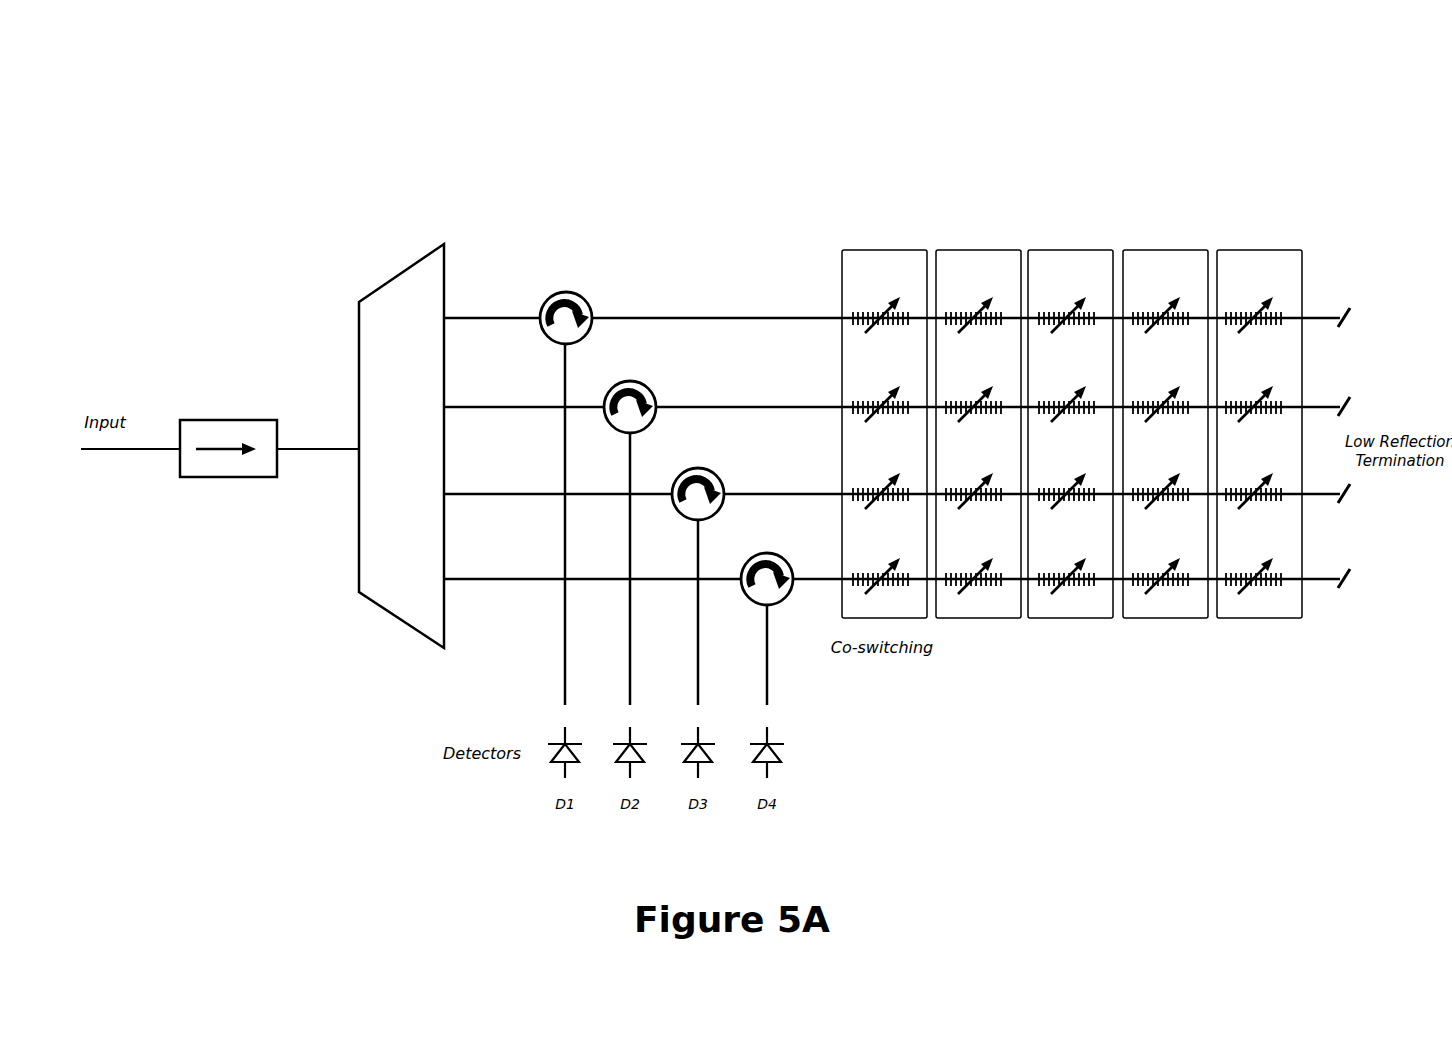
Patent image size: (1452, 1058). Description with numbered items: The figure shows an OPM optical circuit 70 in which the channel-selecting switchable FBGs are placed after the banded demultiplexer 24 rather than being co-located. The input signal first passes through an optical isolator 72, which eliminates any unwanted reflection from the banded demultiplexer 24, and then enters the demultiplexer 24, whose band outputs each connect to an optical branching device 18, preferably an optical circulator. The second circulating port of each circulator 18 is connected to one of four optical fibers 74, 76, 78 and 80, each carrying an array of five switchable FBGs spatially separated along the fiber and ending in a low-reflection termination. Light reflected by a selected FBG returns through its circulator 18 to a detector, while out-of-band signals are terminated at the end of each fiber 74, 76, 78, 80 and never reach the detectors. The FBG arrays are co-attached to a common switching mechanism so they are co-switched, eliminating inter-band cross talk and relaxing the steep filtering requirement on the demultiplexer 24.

The OPM optical circuit 70 is at (1063, 114).
The optical isolator 72 is at (227, 485).
The banded demultiplexer 24 is at (379, 611).
The optical branching device 18 is at (751, 545).
The optical fiber 74 is at (833, 318).
The optical fiber 76 is at (833, 407).
The optical fiber 78 is at (833, 494).
The optical fiber 80 is at (833, 579).